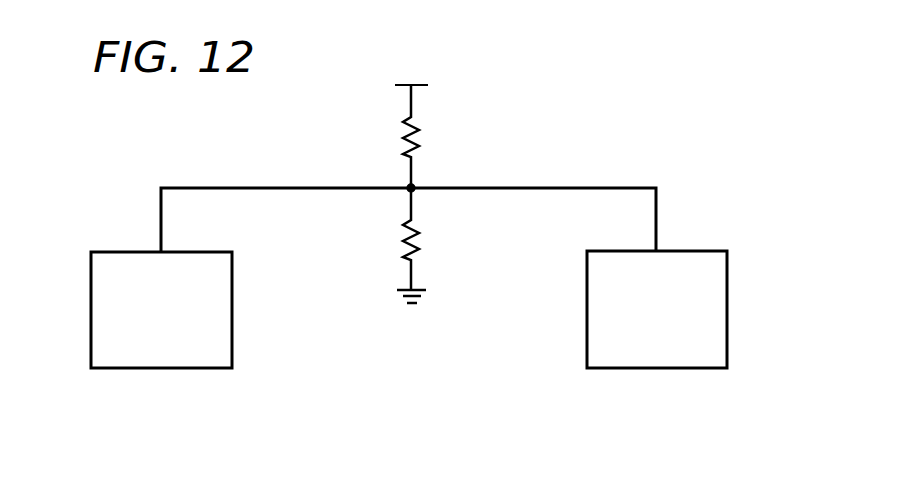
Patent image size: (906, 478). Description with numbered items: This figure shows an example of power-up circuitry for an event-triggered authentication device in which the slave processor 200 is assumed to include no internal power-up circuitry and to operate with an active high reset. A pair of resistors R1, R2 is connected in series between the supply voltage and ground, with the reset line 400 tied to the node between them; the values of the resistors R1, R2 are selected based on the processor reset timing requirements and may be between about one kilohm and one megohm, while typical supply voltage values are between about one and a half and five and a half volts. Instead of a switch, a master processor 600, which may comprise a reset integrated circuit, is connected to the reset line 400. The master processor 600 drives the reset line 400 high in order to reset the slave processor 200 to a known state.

The reset line 400 is at (248, 186).
The processor 200 is at (91, 307).
The master processor 600 is at (728, 313).
The resistor R1 is at (422, 124).
The resistor R2 is at (424, 245).